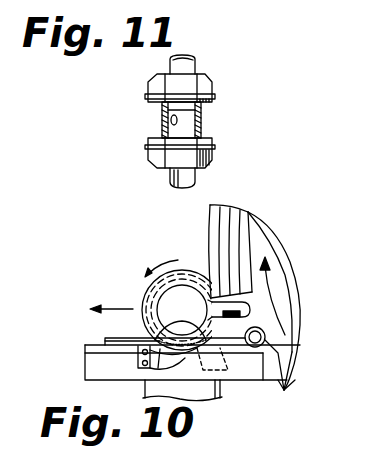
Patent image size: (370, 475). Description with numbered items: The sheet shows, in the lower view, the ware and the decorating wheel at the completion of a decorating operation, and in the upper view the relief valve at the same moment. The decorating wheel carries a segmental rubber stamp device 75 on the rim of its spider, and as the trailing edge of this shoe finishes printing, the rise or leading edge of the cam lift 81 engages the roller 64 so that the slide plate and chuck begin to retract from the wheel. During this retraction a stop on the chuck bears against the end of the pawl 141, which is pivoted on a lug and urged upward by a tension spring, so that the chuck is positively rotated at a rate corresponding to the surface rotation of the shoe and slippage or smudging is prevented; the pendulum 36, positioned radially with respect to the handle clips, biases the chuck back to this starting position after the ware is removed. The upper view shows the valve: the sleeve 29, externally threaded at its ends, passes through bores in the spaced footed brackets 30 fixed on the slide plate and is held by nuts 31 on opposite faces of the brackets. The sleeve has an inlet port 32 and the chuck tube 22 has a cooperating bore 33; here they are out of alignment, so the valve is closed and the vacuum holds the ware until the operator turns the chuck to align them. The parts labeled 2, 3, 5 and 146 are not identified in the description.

In FIG. 10, the support post 2 is at (157, 396).
In FIG. 10, the base 3 is at (85, 362).
In FIG. 10, the housing 5 is at (268, 246).
In FIG. 11, the chuck tube 22 is at (195, 179).
In FIG. 11, the sleeve 29 is at (200, 131).
In FIG. 11, the footed brackets 30 is at (211, 147).
In FIG. 11, the nuts 31 is at (212, 158).
In FIG. 11, the inlet port 32 is at (163, 120).
In FIG. 11, the cooperating bore 33 is at (176, 121).
In FIG. 10, the pendulum 36 is at (225, 368).
In FIG. 10, the follower roller 64 is at (265, 339).
In FIG. 10, the segmental rubber stamp device 75 is at (212, 238).
In FIG. 10, the cam lift 81 is at (283, 378).
In FIG. 10, the pawl 141 is at (126, 362).
In FIG. 10, the link 146 is at (208, 355).